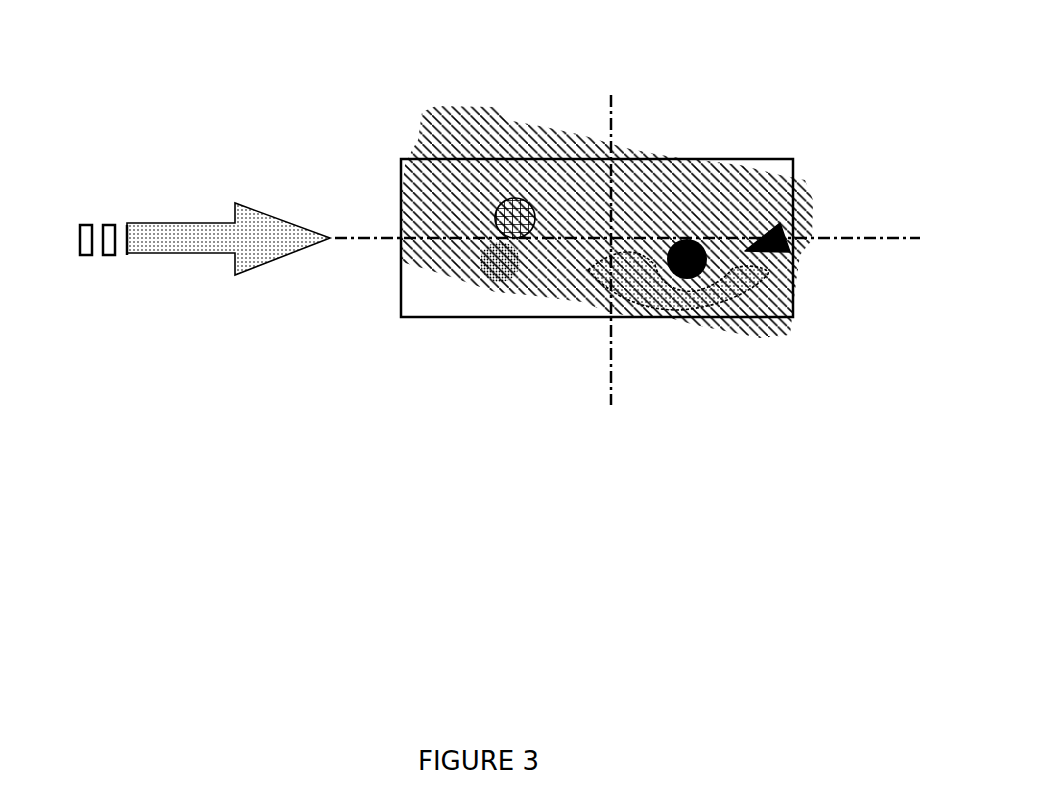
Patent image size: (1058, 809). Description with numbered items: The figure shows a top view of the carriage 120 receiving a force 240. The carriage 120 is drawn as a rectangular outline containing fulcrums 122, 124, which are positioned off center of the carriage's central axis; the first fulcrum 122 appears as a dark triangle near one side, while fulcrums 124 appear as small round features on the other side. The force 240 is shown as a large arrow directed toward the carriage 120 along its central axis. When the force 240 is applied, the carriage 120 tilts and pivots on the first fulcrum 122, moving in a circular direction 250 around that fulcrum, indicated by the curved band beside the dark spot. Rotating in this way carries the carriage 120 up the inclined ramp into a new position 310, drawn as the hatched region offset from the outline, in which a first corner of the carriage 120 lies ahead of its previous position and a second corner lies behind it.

The new position 310 is at (430, 125).
The carriage 120 is at (708, 156).
The fulcrum 124 is at (498, 122).
The circular direction 250 is at (678, 298).
The first fulcrum 122 is at (790, 240).
The force 240 is at (205, 232).